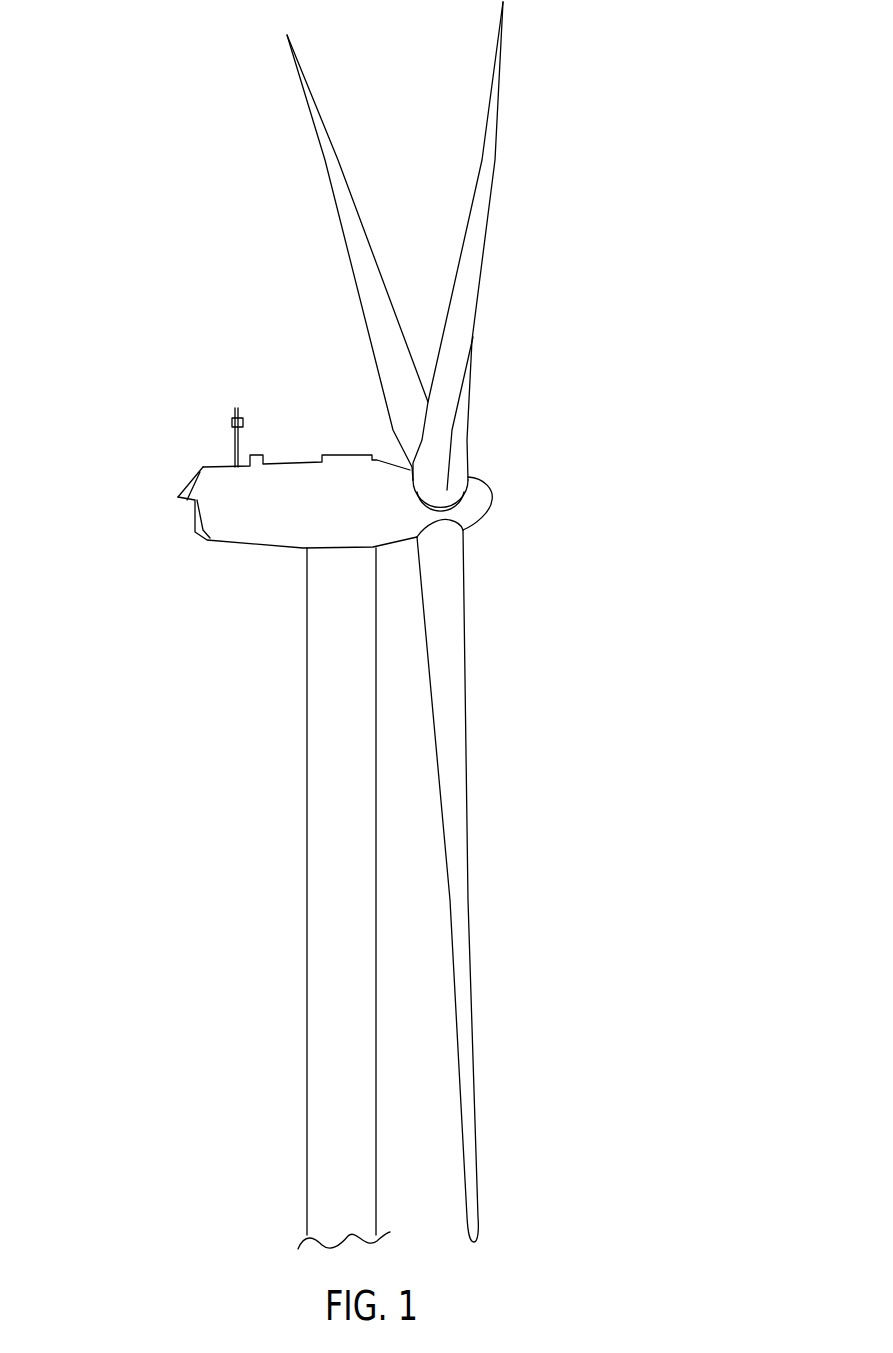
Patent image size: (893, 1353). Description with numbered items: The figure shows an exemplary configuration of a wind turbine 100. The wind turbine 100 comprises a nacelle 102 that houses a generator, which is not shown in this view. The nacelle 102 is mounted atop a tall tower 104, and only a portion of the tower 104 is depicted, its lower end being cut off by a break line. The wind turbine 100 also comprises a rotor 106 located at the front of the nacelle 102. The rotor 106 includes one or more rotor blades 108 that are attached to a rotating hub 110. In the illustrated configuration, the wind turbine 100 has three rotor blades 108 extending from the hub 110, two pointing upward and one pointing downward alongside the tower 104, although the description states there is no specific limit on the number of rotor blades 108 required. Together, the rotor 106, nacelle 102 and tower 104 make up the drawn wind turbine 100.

The wind turbine 100 is at (152, 263).
The nacelle 102 is at (255, 544).
The tower 104 is at (307, 840).
The rotor 106 is at (558, 290).
The rotor blades 108 is at (325, 123).
The rotating hub 110 is at (487, 513).